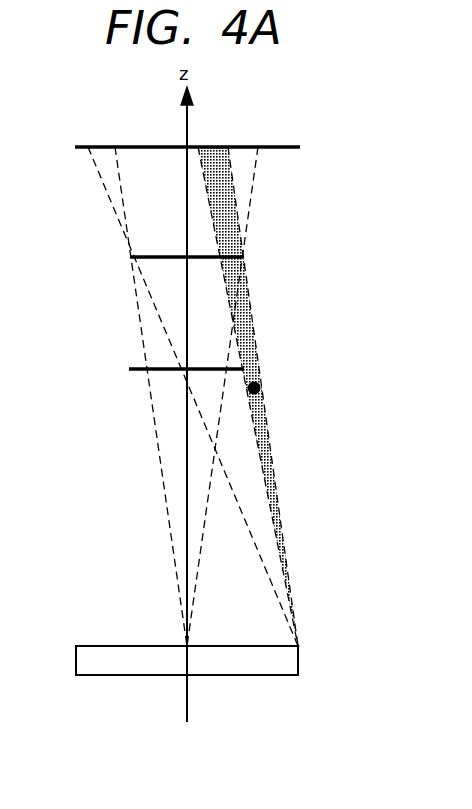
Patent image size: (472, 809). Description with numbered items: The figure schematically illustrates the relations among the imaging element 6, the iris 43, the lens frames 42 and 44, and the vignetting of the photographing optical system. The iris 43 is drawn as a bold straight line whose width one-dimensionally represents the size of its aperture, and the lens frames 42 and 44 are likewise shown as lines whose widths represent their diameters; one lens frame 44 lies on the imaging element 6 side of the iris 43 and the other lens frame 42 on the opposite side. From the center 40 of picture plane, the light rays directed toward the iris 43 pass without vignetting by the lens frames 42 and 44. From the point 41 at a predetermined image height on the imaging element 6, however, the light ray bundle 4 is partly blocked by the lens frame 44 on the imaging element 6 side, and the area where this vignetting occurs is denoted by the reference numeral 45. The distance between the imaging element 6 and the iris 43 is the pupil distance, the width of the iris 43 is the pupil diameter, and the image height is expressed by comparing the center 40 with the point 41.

The lens frame 42 is at (275, 147).
The iris 43 is at (210, 259).
The lens frame 44 is at (237, 368).
The vignetting area 45 is at (262, 405).
The optical axis / light ray 4 is at (186, 548).
The imaging element 6 is at (240, 676).
The center of picture plane 40 is at (187, 646).
The point on the imaging element 41 is at (298, 646).